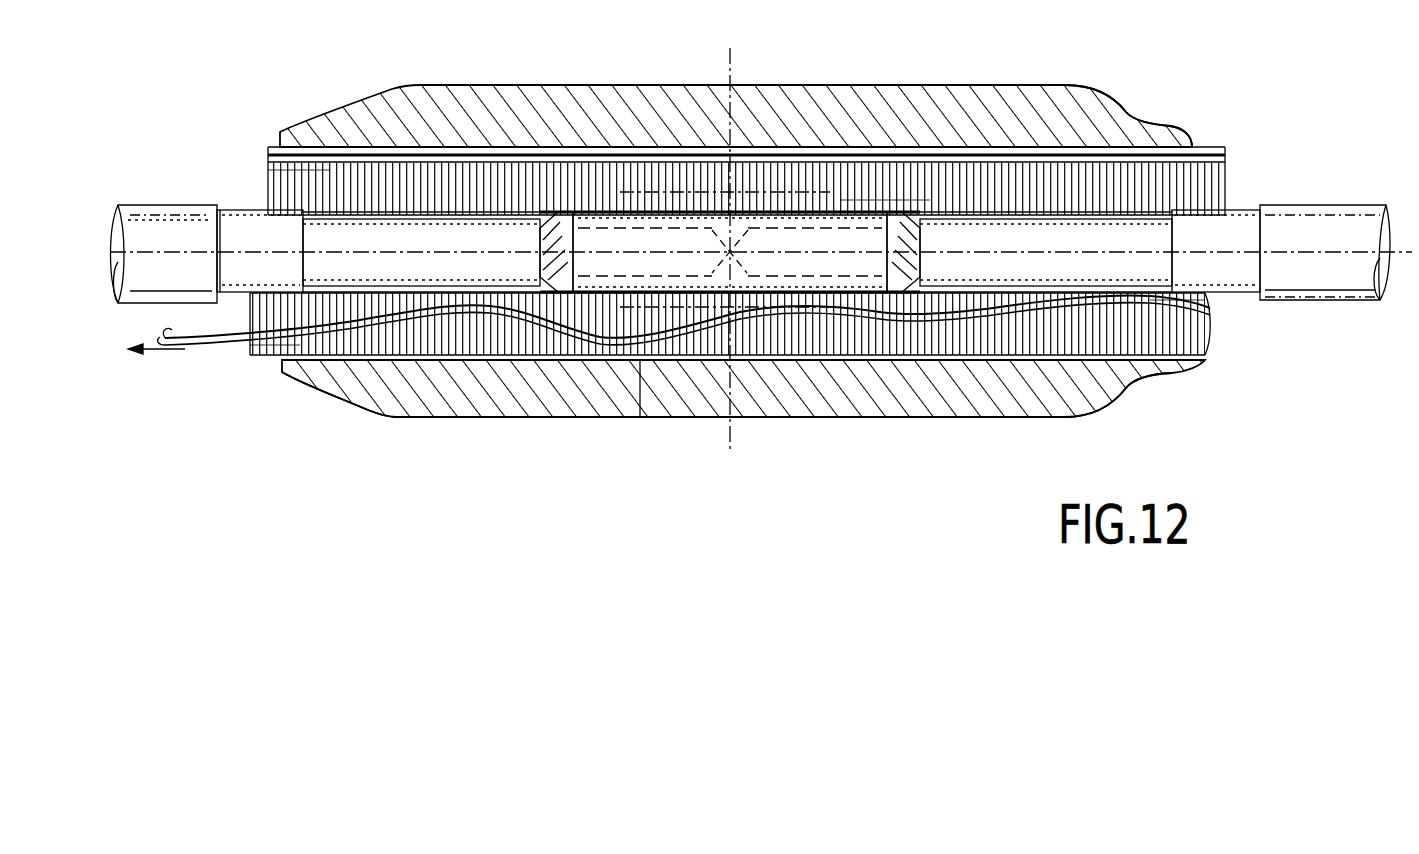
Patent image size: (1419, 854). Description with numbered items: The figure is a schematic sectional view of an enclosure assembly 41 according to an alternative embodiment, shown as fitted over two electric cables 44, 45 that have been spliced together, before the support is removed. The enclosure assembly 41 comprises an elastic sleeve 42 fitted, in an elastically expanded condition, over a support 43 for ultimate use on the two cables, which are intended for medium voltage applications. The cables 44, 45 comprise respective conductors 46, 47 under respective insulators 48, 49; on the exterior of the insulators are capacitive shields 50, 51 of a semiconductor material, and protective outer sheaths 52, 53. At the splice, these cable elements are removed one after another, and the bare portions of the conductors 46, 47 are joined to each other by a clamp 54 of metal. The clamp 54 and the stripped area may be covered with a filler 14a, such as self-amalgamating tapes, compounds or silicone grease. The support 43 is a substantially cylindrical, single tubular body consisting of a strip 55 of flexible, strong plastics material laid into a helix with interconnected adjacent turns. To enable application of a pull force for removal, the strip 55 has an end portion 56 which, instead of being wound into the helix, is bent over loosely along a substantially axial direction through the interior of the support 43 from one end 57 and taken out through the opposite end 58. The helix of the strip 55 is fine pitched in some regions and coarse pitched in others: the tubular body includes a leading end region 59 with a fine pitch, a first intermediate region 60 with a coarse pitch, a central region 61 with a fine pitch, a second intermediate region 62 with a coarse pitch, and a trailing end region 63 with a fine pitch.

The filler 14a is at (640, 365).
The enclosure assembly 41 is at (377, 430).
The elastic sleeve 42 is at (462, 412).
The support 43 is at (1213, 138).
The electric cable 44 is at (115, 205).
The electric cable 45 is at (1383, 265).
The conductor 46 is at (618, 225).
The conductor 47 is at (808, 220).
The insulator 48 is at (400, 215).
The insulator 49 is at (1017, 210).
The capacitive shield 50 is at (245, 232).
The capacitive shield 51 is at (1237, 208).
The protective outer sheath 52 is at (176, 225).
The protective outer sheath 53 is at (1303, 234).
The clamp 54 is at (745, 215).
The strip 55 is at (363, 363).
The end portion 56 is at (213, 343).
The end 57 is at (1203, 300).
The opposite end 58 is at (244, 347).
The leading end region 59 is at (1147, 343).
The first intermediate region 60 is at (977, 332).
The central region 61 is at (873, 200).
The second intermediate region 62 is at (494, 198).
The trailing end region 63 is at (293, 187).